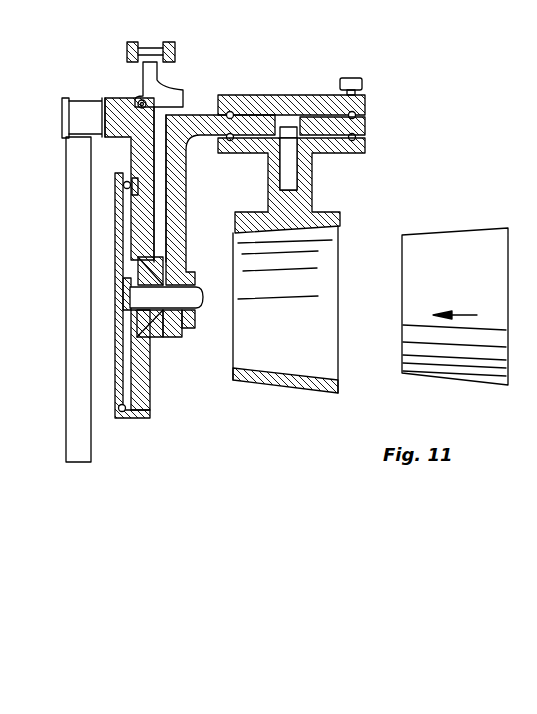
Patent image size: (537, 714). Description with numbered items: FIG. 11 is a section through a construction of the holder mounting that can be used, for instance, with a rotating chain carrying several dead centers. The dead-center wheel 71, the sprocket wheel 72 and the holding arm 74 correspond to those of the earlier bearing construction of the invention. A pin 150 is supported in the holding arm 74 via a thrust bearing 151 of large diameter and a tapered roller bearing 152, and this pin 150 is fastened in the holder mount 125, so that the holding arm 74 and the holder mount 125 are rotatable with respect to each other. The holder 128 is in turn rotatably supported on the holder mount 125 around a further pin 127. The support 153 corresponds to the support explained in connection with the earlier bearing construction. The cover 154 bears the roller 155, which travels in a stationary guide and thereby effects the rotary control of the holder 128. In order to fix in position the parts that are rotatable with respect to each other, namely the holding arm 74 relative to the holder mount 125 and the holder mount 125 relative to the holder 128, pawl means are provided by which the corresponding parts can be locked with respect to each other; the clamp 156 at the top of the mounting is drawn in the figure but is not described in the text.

The dead-center wheel 71 is at (80, 445).
The sprocket wheel 72 is at (82, 107).
The holding arm 74 is at (138, 418).
The holder mount 125 is at (182, 193).
The pin 127 is at (288, 175).
The holder 128 is at (298, 358).
The pin 150 is at (175, 300).
The thrust bearing 151 is at (122, 412).
The tapered roller bearing 152 is at (150, 338).
The support 153 is at (280, 127).
The cover 154 is at (353, 107).
The roller 155 is at (347, 76).
The clamp 156 is at (162, 97).